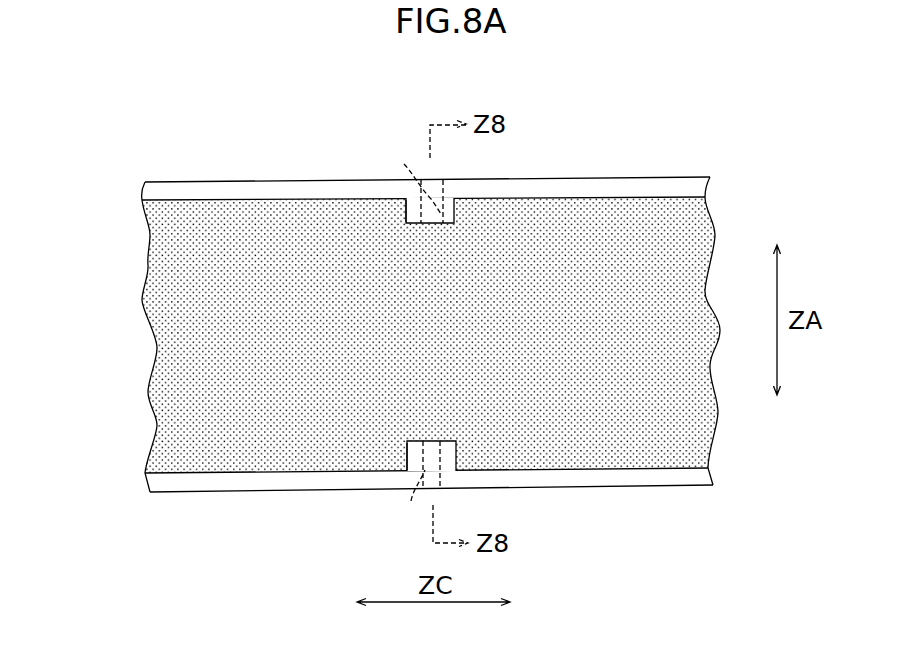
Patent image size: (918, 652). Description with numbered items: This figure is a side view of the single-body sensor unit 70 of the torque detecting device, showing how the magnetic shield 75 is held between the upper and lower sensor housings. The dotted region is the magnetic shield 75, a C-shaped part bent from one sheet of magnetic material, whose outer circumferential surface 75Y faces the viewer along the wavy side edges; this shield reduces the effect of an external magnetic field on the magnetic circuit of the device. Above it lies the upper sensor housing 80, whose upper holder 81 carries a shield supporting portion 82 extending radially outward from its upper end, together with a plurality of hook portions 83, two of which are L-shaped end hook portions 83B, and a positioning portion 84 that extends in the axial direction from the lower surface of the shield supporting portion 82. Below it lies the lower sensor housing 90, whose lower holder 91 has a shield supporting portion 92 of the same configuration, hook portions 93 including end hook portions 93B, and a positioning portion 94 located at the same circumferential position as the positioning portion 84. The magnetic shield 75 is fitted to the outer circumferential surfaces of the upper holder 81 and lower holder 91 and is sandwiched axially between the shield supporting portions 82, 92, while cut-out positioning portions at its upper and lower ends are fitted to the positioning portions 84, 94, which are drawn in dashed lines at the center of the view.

The sensor unit 70 is at (137, 144).
The magnetic shield 75 is at (397, 334).
The outer circumferential surface 75Y is at (142, 297).
The upper sensor housing 80 is at (430, 160).
The upper holder 81 is at (262, 182).
The shield supporting portion 82 is at (627, 188).
The hook portions 83 is at (400, 160).
The end hook portions 83B is at (406, 215).
The positioning portion 84 is at (444, 200).
The lower sensor housing 90 is at (433, 507).
The lower holder 91 is at (562, 488).
The shield supporting portion 92 is at (628, 475).
The hook portions 93 is at (405, 507).
The end hook portions 93B is at (407, 452).
The positioning portion 94 is at (442, 455).